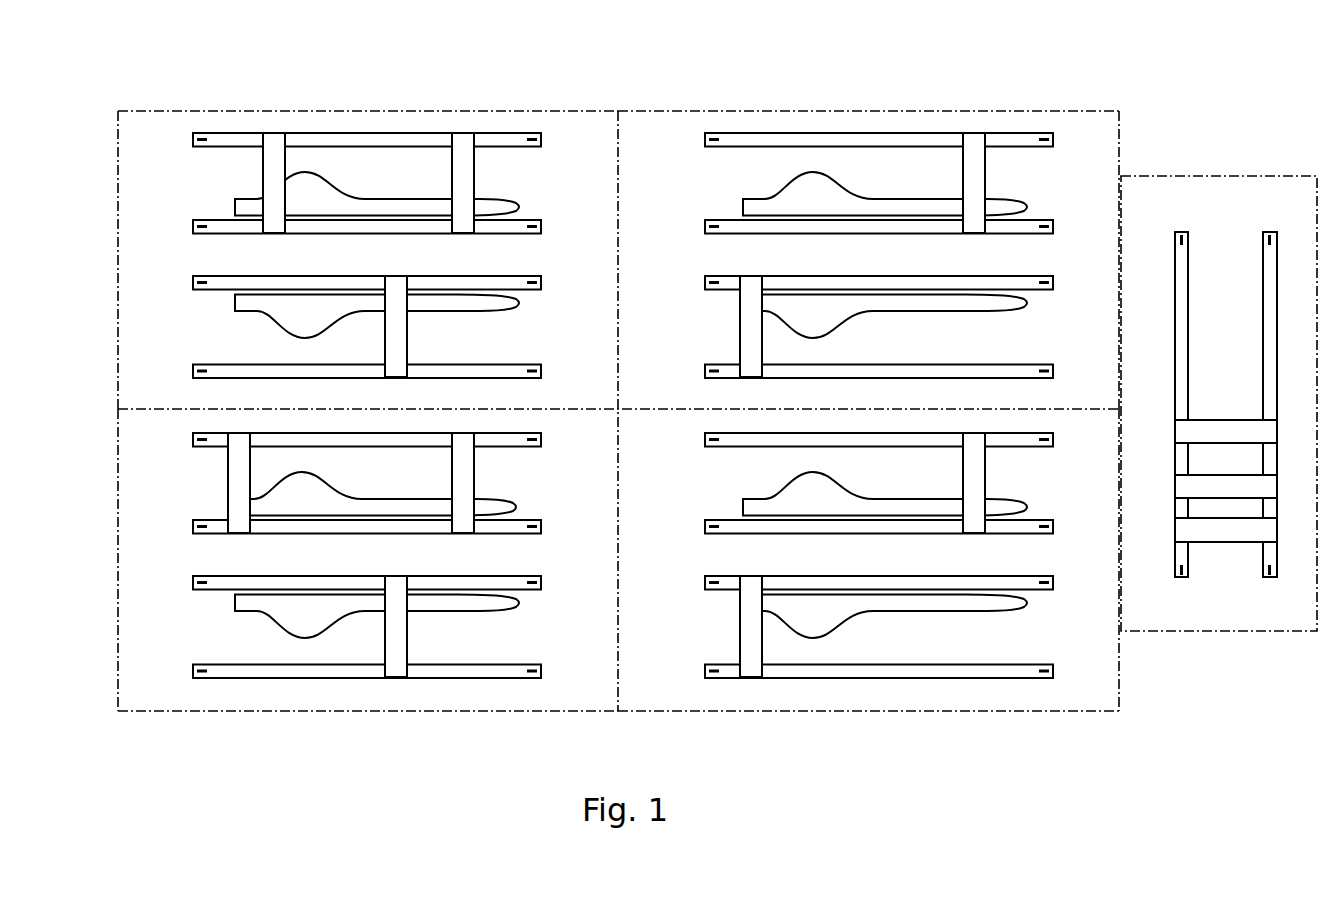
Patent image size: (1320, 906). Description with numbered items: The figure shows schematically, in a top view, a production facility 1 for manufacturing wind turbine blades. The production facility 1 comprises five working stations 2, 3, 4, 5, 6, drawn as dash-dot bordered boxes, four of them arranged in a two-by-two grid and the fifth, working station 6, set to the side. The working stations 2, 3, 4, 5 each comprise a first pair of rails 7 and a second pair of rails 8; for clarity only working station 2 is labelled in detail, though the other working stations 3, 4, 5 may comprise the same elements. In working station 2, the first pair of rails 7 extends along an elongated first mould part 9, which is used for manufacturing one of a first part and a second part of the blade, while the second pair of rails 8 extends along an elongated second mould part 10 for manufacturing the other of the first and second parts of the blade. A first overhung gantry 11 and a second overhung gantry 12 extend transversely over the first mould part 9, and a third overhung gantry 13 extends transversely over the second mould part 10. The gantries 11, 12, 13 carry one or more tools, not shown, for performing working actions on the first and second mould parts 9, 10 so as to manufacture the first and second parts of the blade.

The production facility 1 is at (717, 382).
The working station 2 is at (368, 232).
The working station 3 is at (840, 110).
The working station 4 is at (515, 712).
The working station 5 is at (827, 712).
The working station 6 is at (1293, 632).
The first pair of rails 7 is at (385, 140).
The second pair of rails 8 is at (510, 283).
The first mould part 9 is at (513, 205).
The second mould part 10 is at (513, 306).
The first overhung gantry 11 is at (274, 143).
The second overhung gantry 12 is at (465, 145).
The third overhung gantry 13 is at (395, 367).